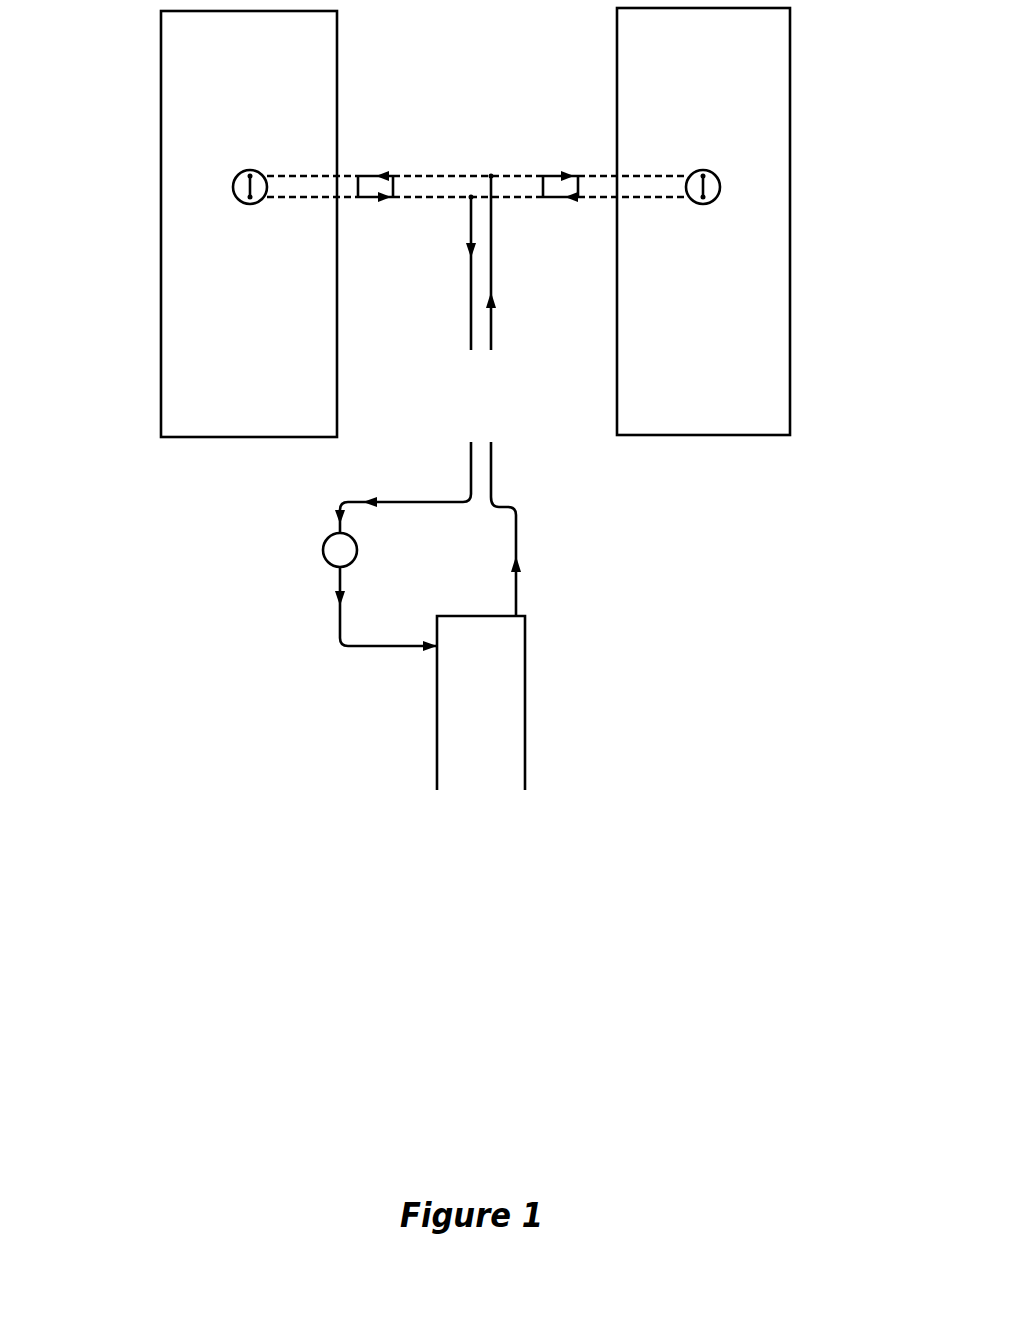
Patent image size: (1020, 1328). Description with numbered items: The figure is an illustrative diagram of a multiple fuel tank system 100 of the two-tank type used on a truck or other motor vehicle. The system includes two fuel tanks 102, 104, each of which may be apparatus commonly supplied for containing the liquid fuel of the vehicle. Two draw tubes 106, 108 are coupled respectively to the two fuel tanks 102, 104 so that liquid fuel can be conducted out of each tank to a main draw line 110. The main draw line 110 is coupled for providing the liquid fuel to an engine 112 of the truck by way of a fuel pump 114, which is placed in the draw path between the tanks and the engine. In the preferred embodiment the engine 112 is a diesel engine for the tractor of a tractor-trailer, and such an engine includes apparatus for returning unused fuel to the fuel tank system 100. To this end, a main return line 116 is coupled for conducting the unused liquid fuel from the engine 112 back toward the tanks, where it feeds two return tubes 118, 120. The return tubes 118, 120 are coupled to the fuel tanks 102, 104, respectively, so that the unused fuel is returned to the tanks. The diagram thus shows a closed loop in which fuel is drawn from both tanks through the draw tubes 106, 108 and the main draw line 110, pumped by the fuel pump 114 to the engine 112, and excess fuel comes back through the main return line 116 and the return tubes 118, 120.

The multiple fuel tank system 100 is at (142, 498).
The fuel tank 102 is at (161, 112).
The fuel tank 104 is at (790, 96).
The draw tube 106 is at (425, 197).
The draw tube 108 is at (533, 197).
The main draw line 110 is at (388, 500).
The engine 112 is at (525, 730).
The fuel pump 114 is at (323, 553).
The main return line 116 is at (516, 545).
The return tube 118 is at (403, 176).
The return tube 120 is at (515, 176).